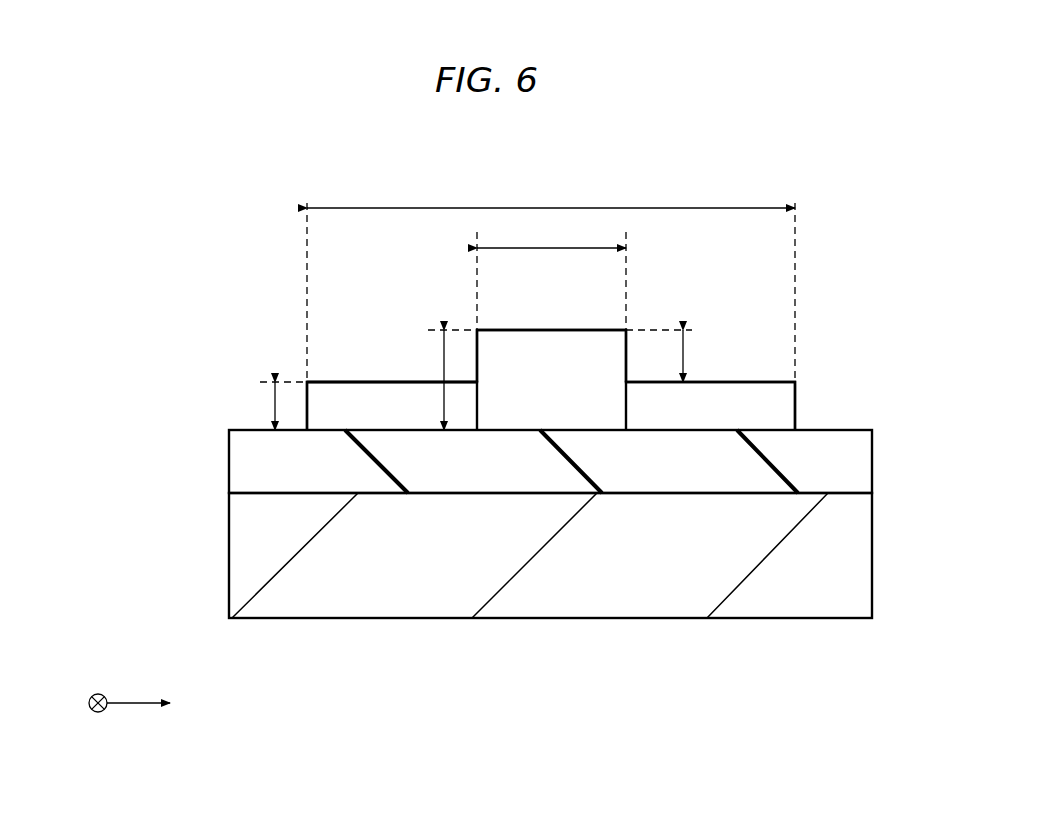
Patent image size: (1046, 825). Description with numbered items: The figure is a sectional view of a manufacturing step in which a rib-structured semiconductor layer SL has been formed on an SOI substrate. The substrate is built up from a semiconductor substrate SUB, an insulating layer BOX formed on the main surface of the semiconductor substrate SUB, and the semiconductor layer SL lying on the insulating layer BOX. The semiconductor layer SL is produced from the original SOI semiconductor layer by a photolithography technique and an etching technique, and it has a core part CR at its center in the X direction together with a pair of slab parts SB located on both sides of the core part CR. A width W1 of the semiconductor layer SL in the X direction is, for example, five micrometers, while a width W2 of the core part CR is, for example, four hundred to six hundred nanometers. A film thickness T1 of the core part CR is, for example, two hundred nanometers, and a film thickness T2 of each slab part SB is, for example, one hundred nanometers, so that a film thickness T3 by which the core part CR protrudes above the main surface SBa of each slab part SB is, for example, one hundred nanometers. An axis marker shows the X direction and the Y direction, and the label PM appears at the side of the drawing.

The semiconductor substrate SUB is at (250, 546).
The insulating layer BOX is at (250, 461).
The semiconductor layer SL is at (551, 351).
The slab part SB is at (400, 397).
The main surface of slab part SBa is at (343, 380).
The core part CR is at (553, 355).
The width of semiconductor layer W1 is at (551, 280).
The width of core part W2 is at (551, 274).
The film thickness of core part T1 is at (444, 380).
The film thickness of slab part T2 is at (270, 406).
The film thickness of core part protruding from slab main surface T3 is at (674, 356).
The photomask / pattern region PM is at (916, 244).
The X direction X is at (198, 706).
The Y direction Y is at (98, 685).